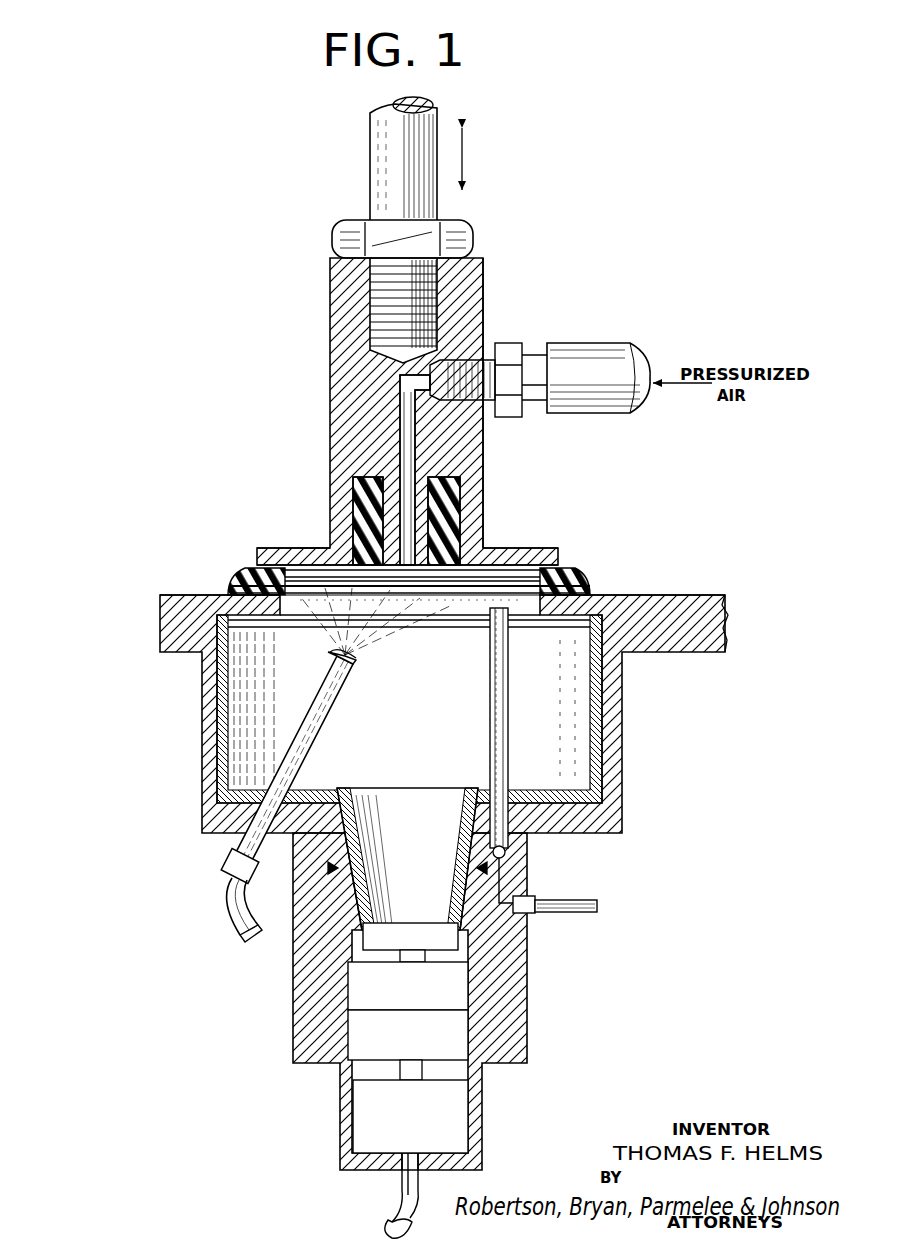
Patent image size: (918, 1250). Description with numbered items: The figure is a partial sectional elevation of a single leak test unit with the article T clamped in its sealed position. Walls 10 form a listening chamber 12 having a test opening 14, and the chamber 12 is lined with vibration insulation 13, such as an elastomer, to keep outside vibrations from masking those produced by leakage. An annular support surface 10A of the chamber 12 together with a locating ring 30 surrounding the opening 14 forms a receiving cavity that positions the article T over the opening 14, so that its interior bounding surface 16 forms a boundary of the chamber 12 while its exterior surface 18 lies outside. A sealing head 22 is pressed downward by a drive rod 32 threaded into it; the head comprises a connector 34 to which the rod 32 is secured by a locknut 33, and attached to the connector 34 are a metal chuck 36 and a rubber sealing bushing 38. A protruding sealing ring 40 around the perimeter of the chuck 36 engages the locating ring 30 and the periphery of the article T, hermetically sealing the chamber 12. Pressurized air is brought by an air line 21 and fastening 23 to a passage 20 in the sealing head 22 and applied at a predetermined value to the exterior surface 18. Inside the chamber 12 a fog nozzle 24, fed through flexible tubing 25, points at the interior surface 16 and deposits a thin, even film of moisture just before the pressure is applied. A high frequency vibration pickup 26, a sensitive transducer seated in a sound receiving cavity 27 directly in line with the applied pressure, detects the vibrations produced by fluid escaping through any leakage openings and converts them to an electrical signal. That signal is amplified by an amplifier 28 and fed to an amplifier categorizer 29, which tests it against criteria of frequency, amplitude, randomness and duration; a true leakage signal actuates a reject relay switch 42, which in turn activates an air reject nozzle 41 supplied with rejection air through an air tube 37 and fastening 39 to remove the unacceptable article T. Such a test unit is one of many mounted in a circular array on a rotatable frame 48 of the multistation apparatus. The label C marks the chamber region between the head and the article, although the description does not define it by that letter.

The walls 10 is at (206, 672).
The annular support surface 10A is at (255, 606).
The chamber 12 is at (628, 744).
The vibration insulation 13 is at (214, 733).
The opening 14 is at (530, 604).
The bounding surface 16 is at (445, 586).
The exterior surface 18 is at (490, 569).
The passage 20 is at (400, 416).
The air line 21 is at (626, 344).
The sealing head 22 is at (500, 311).
The fastening 23 is at (511, 345).
The fog nozzle 24 is at (306, 740).
The flexible tubing 25 is at (222, 903).
The high frequency vibration pickup 26 is at (450, 934).
The sound receiving cavity 27 is at (460, 835).
The amplifier 28 is at (358, 983).
The amplifier categorizer 29 is at (456, 1024).
The locating ring 30 is at (254, 580).
The drive rod 32 is at (386, 150).
The locknut 33 is at (345, 236).
The connector 34 is at (346, 350).
The metal chuck 36 is at (294, 548).
The air tube 37 is at (596, 900).
The rubber sealing bushing 38 is at (456, 504).
The fastening 39 is at (536, 896).
The sealing ring 40 is at (496, 585).
The air reject nozzle 41 is at (490, 696).
The reject relay switch 42 is at (360, 1100).
The frame 48 is at (700, 594).
The article T is at (312, 548).
The chamber C is at (528, 548).